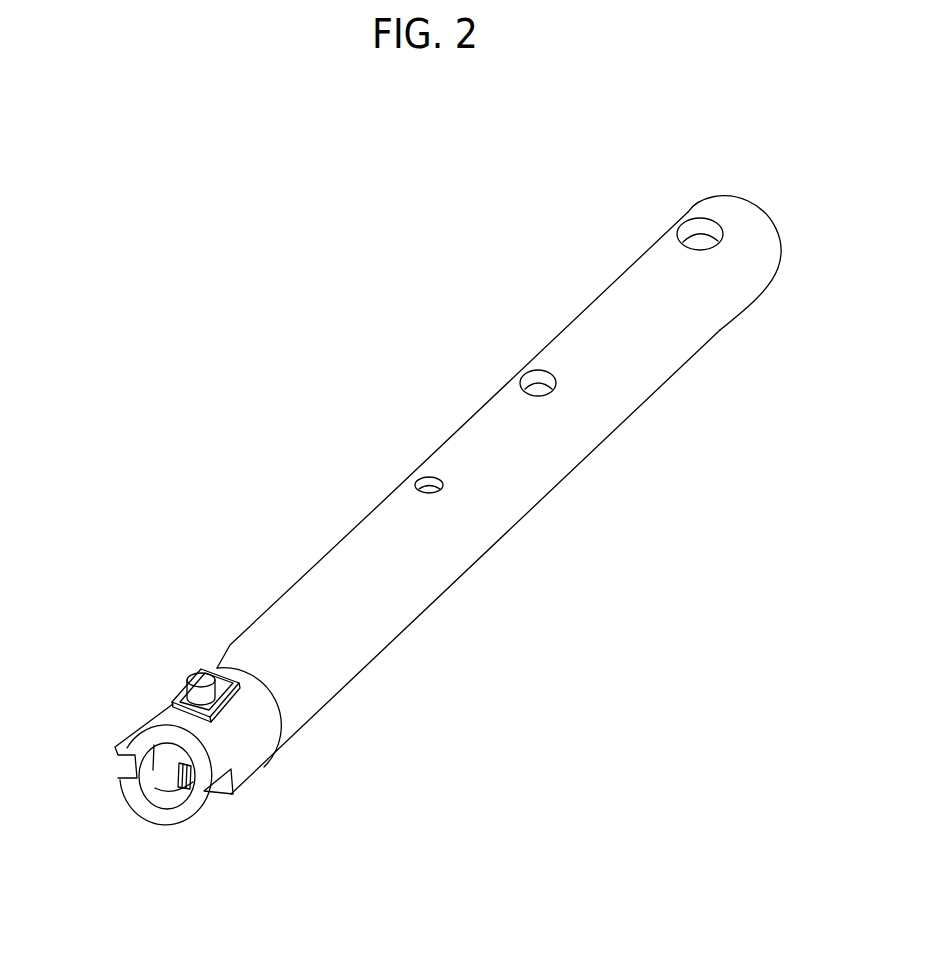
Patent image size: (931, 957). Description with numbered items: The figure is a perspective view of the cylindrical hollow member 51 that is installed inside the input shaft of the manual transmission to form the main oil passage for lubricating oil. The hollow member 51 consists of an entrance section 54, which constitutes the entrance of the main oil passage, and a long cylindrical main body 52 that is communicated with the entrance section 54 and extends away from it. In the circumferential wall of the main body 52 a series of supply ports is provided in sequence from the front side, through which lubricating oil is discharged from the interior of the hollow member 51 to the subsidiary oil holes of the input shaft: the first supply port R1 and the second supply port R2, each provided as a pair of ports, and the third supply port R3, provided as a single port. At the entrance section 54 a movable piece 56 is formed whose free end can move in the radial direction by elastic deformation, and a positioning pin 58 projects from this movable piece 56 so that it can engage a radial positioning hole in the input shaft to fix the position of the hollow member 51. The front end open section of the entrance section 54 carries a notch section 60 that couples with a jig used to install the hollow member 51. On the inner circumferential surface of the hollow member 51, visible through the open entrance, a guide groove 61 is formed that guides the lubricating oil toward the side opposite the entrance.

The hollow member 51 is at (362, 226).
The main body 52 is at (493, 508).
The entrance section 54 is at (253, 756).
The movable piece 56 is at (219, 677).
The positioning pin 58 is at (198, 679).
The notch section 60 is at (118, 778).
The guide groove 61 is at (172, 787).
The first supply port R1 is at (700, 224).
The second supply port R2 is at (537, 380).
The third supply port R3 is at (430, 481).